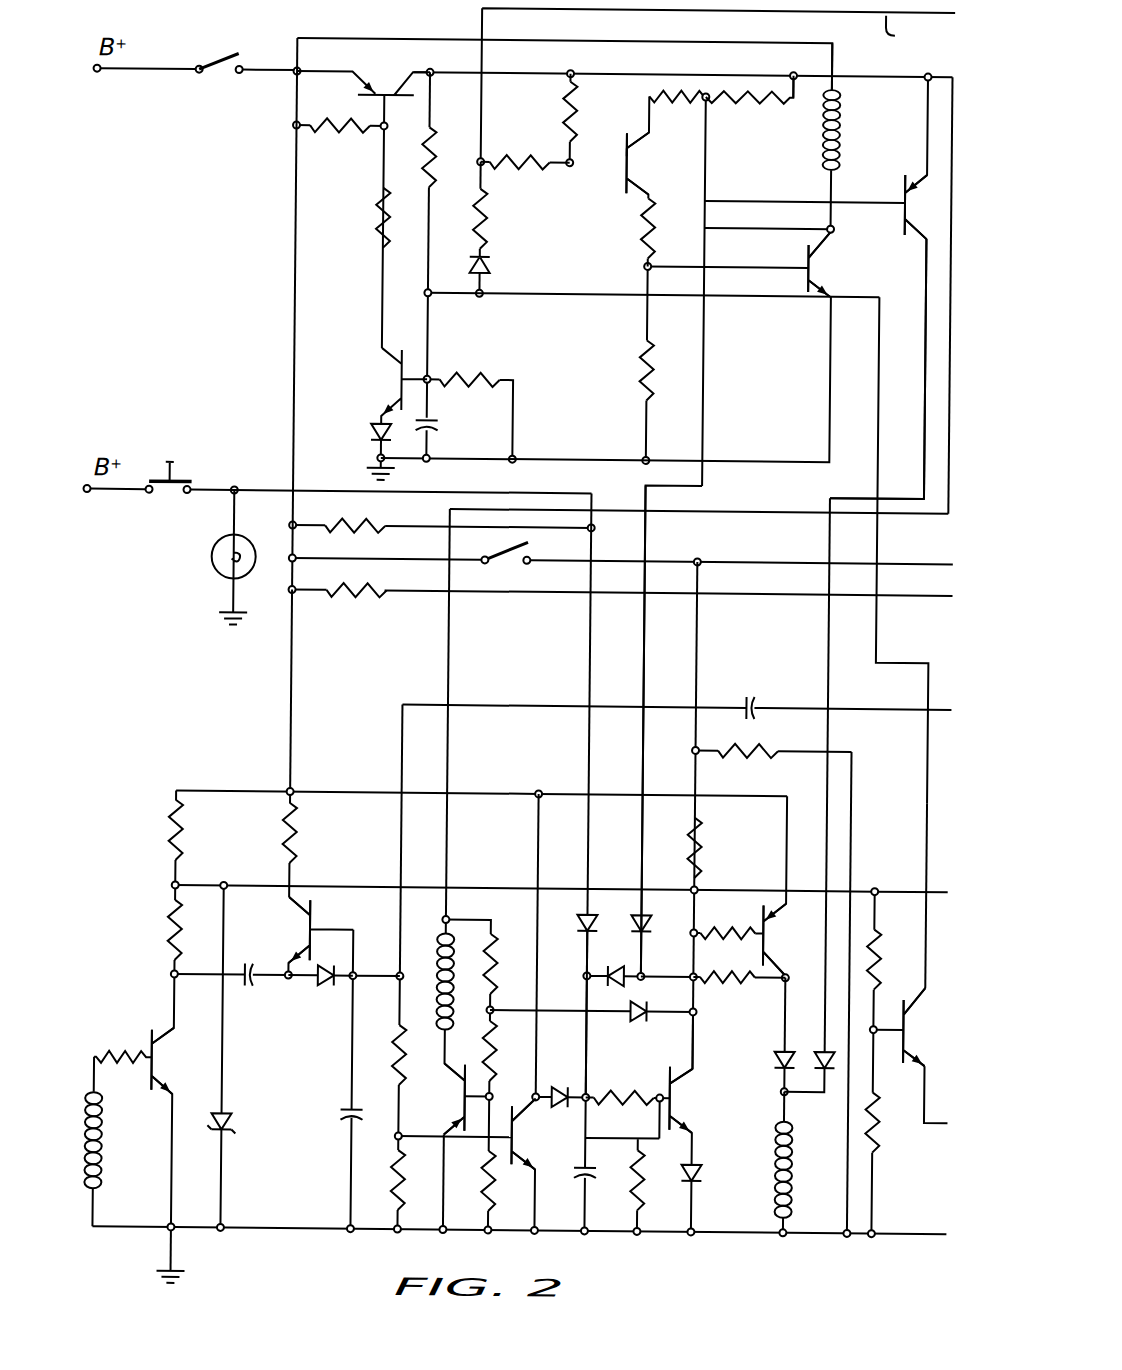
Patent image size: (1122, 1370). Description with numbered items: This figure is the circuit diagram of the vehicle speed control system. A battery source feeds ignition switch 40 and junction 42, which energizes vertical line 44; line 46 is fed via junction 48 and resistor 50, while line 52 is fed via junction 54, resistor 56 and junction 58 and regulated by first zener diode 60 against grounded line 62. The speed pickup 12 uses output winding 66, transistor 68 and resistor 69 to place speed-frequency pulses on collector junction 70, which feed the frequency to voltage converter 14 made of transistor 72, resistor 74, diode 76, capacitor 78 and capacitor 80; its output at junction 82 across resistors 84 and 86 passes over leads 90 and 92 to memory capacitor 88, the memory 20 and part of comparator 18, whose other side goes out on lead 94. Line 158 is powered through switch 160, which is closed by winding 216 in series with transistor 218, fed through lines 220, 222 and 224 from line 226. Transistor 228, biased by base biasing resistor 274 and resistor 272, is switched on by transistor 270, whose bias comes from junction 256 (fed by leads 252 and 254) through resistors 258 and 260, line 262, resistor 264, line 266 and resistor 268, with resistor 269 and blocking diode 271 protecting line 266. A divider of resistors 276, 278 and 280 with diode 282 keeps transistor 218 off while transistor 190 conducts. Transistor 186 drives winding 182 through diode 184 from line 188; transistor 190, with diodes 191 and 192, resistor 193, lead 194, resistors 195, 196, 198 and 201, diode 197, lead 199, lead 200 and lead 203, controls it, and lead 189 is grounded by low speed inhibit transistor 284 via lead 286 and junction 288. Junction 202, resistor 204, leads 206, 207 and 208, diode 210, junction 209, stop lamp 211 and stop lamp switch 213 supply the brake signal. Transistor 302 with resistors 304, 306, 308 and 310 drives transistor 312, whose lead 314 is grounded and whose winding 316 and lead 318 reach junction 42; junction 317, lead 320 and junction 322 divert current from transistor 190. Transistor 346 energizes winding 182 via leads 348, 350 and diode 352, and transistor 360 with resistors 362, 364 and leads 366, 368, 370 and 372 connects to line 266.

The ignition switch 40 is at (233, 57).
The junction 42 is at (294, 75).
The vertical line 44 is at (291, 397).
The line 46 is at (889, 596).
The junction 48 is at (292, 591).
The resistor 50 is at (364, 596).
The line 52 is at (900, 885).
The junction 54 is at (293, 792).
The resistor 56 is at (173, 838).
The junction 58 is at (173, 884).
The first zener diode 60 is at (238, 1128).
The grounded line 62 is at (310, 1234).
The output winding 66 is at (102, 1157).
The transistor 68 is at (160, 1057).
The resistor 69 is at (128, 1040).
The collector junction 70 is at (173, 977).
The transistor 72 is at (318, 923).
The resistor 74 is at (297, 837).
The diode 76 is at (331, 988).
The capacitor 78 is at (251, 960).
The capacitor 80 is at (341, 1115).
The junction 82 is at (397, 974).
The resistor 84 is at (393, 1058).
The resistor 86 is at (420, 1178).
The memory capacitor 88 is at (780, 684).
The lead 90 is at (401, 753).
The lead 92 is at (494, 704).
The lead 94 is at (872, 709).
The speed pickup 12 is at (125, 997).
The frequency to voltage converter 14 is at (276, 1043).
The comparator 18 is at (688, 694).
The memory 20 is at (749, 692).
The line 158 is at (766, 551).
The switch 160 is at (504, 566).
The solenoid or winding 182 is at (774, 1166).
The diode 184 is at (773, 1058).
The transistor 186 is at (767, 935).
The line 188 is at (511, 778).
The lead 189 is at (538, 852).
The transistor 190 is at (677, 1106).
The diode 191 is at (566, 1075).
The diode 192 is at (700, 1177).
The resistor 193 is at (614, 1093).
The lead 194 is at (704, 953).
The resistor 195 is at (715, 984).
The resistor 196 is at (723, 927).
The diode 197 is at (621, 953).
The resistor 198 is at (706, 845).
The lead 199 is at (588, 1050).
The lead 200 is at (698, 640).
The resistor 201 is at (735, 741).
The junction 202 is at (294, 527).
The lead 203 is at (853, 771).
The resistor 204 is at (375, 524).
The lead 206 is at (542, 527).
The lead 207 is at (526, 493).
The lead 208 is at (588, 650).
The junction 209 is at (233, 490).
The diode 210 is at (610, 912).
The stop lamp 211 is at (210, 562).
The stop lamp switch 213 is at (182, 475).
The solenoid or winding 216 is at (452, 942).
The transistor 218 is at (449, 1082).
The line 220 is at (447, 663).
The line 222 is at (747, 512).
The line 224 is at (947, 450).
The line 226 is at (645, 73).
The transistor 228 is at (380, 88).
The lead 252 is at (916, 33).
The lead 254 is at (477, 22).
The junction 256 is at (480, 158).
The resistor 258 is at (527, 165).
The resistor 260 is at (649, 123).
The line 262 is at (497, 73).
The resistor 264 is at (424, 165).
The line 266 is at (425, 261).
The resistor 268 is at (447, 374).
The resistor 269 is at (488, 235).
The transistor 270 is at (394, 383).
The blocking diode 271 is at (488, 267).
The resistor 272 is at (379, 238).
The base biasing resistor 274 is at (347, 130).
The resistor 276 is at (517, 934).
The resistor 278 is at (487, 1049).
The resistor 280 is at (513, 1190).
The diode 282 is at (641, 1007).
The transistor 284 is at (524, 1137).
The lead 286 is at (466, 1140).
The junction 288 is at (398, 1136).
The transistor 302 is at (632, 162).
The resistor 304 is at (748, 102).
The resistor 306 is at (675, 101).
The resistor 308 is at (642, 218).
The resistor 310 is at (640, 377).
The transistor 312 is at (822, 266).
The lead 314 is at (826, 394).
The solenoid or winding 316 is at (836, 143).
The junction 317 is at (640, 973).
The lead 318 is at (728, 41).
The lead 320 is at (645, 545).
The junction 322 is at (832, 231).
The transistor 346 is at (895, 184).
The lead 348 is at (923, 364).
The lead 350 is at (830, 833).
The diode 352 is at (830, 1070).
The transistor 360 is at (909, 1029).
The resistor 362 is at (892, 926).
The resistor 364 is at (881, 1140).
The lead 366 is at (928, 1125).
The lead 368 is at (928, 858).
The lead 370 is at (875, 452).
The lead 372 is at (545, 297).